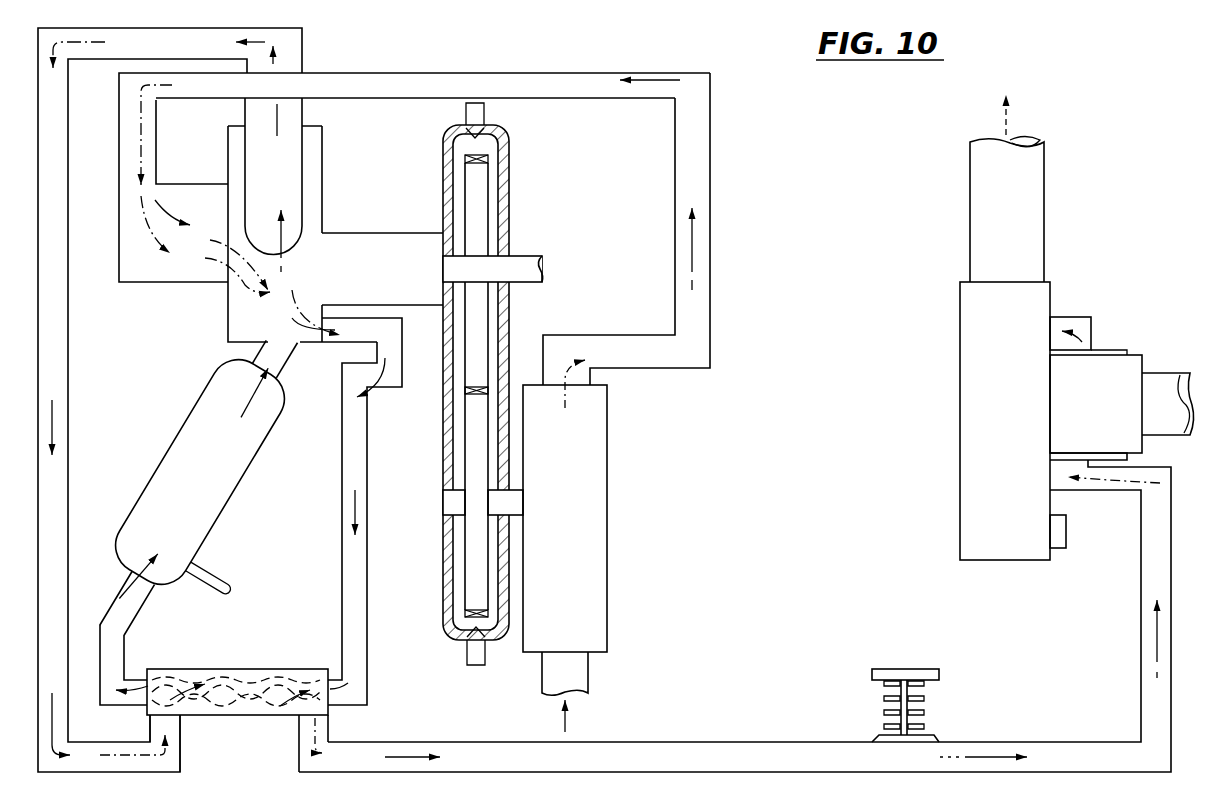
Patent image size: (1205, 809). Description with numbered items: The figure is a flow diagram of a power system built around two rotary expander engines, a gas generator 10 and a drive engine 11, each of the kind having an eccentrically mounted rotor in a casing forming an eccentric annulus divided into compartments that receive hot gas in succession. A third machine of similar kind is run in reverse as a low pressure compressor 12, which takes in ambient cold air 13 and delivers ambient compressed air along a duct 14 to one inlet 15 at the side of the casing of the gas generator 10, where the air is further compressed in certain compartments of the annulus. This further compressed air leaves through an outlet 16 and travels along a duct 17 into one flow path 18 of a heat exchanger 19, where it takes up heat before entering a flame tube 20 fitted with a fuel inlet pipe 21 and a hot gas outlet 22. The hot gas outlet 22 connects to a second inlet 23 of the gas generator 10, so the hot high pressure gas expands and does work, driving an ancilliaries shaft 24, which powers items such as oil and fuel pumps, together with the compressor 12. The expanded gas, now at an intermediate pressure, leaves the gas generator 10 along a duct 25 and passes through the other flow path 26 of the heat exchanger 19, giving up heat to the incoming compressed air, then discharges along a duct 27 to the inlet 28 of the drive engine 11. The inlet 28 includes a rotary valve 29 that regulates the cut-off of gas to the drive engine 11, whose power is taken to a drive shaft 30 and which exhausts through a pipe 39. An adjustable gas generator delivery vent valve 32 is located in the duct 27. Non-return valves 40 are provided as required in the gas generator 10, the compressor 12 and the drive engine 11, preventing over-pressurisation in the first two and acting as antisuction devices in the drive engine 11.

The gas generator engine 10 is at (227, 312).
The drive engine 11 is at (986, 540).
The low pressure compressor 12 is at (598, 562).
The ambient cold air 13 is at (563, 727).
The duct 14 is at (712, 222).
The inlet 15 is at (197, 283).
The outlet 16 is at (335, 320).
The duct 17 is at (367, 530).
The flow path 18 is at (315, 669).
The heat exchanger 19 is at (259, 715).
The flame tube 20 is at (232, 514).
The fuel inlet pipe 21 is at (216, 584).
The hot gas outlet 22 is at (282, 366).
The second inlet 23 is at (266, 348).
The ancilliaries shaft 24 is at (520, 262).
The duct 25 is at (72, 468).
The flow path 26 is at (220, 715).
The duct 27 is at (787, 742).
The inlet 28 is at (1048, 482).
The rotary valve 29 is at (1080, 318).
The drive shaft 30 is at (1168, 382).
The gas generator delivery vent valve 32 is at (893, 669).
The exhaust pipe 39 is at (1030, 186).
The non-return valve 40 is at (1064, 532).